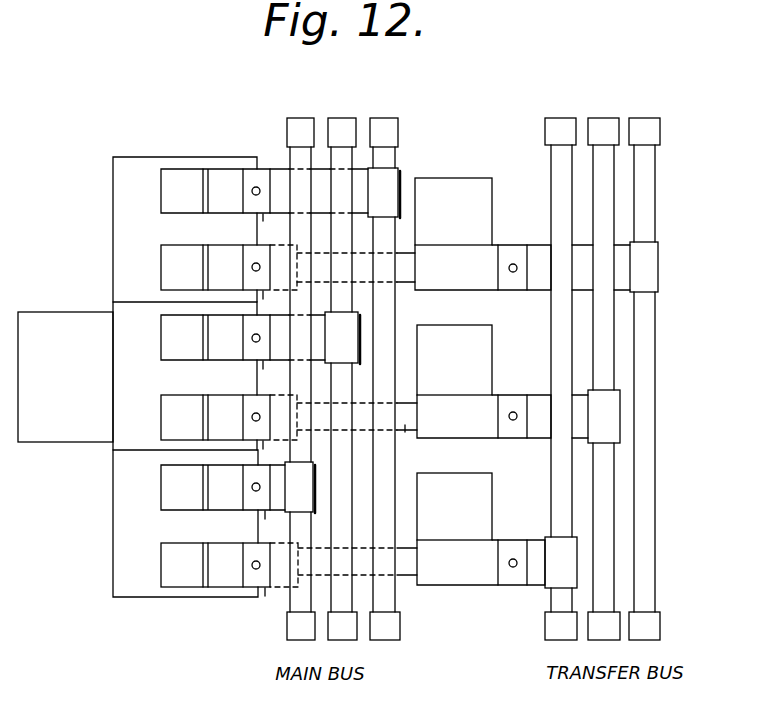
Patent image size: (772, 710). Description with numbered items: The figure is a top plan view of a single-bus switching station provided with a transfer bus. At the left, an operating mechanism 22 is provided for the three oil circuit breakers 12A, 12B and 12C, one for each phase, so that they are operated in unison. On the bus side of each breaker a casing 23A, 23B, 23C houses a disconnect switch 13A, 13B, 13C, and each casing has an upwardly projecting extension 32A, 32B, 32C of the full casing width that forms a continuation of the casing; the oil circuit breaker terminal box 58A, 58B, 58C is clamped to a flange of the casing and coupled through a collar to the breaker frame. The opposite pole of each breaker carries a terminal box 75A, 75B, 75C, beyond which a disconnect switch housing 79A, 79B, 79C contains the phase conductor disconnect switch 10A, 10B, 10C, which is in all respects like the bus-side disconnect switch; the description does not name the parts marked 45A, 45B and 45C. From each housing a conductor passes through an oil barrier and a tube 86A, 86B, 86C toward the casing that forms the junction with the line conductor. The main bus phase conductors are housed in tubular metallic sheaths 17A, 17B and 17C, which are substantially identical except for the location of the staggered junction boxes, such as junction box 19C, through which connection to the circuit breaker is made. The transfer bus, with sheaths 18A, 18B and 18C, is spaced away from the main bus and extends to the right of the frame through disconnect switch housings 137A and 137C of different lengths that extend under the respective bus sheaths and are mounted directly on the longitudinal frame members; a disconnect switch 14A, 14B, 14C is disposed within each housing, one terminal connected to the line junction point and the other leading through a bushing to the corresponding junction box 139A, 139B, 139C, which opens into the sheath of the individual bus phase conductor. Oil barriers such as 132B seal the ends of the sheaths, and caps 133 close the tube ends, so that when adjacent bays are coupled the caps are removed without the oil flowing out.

The operating mechanism 22 is at (51, 321).
The oil circuit breaker 12A is at (127, 540).
The oil circuit breaker 12B is at (123, 440).
The oil circuit breaker 12C is at (122, 212).
The casing 23A is at (223, 470).
The casing 23B is at (222, 321).
The casing 23C is at (230, 174).
The oil circuit breaker terminal box 58A is at (170, 503).
The oil circuit breaker terminal box 58B is at (168, 360).
The oil circuit breaker terminal box 58C is at (168, 208).
The extension 32A is at (253, 503).
The extension 32B is at (254, 356).
The extension 32C is at (260, 174).
The disconnect switch 13A is at (273, 503).
The disconnect switch 13B is at (291, 356).
The disconnect switch 13C is at (313, 207).
The terminal box 75A is at (175, 582).
The terminal box 75B is at (168, 426).
The terminal box 75C is at (166, 276).
The disconnect switch housing 79A is at (223, 580).
The disconnect switch housing 79B is at (223, 398).
The disconnect switch housing 79C is at (218, 254).
The transfer breaker contact A 45A is at (253, 582).
The transfer breaker contact B 45B is at (257, 434).
The transfer breaker contact C 45C is at (250, 254).
The disconnect switch 10A is at (276, 580).
The disconnect switch 10B is at (277, 430).
The disconnect switch 10C is at (277, 281).
The tube 86A is at (405, 575).
The tube 86B is at (403, 428).
The tube 86C is at (404, 290).
The tubular metallic sheath 17A is at (297, 156).
The tubular metallic sheath 17B is at (340, 156).
The tubular metallic sheath 17C is at (399, 134).
The tubular metallic sheath 18A is at (555, 160).
The tubular metallic sheath 18B is at (603, 160).
The tubular metallic sheath 18C is at (649, 355).
The junction box 19C is at (389, 177).
The cap 133 is at (343, 118).
The disconnect switch 14A is at (515, 537).
The disconnect switch 14B is at (509, 397).
The disconnect switch 14C is at (514, 246).
The disconnect switch housing 137A is at (483, 585).
The oil barrier 132B is at (483, 439).
The disconnect switch housing 137C is at (476, 291).
The junction box 139A is at (555, 582).
The junction box 139B is at (612, 419).
The junction box 139C is at (648, 269).